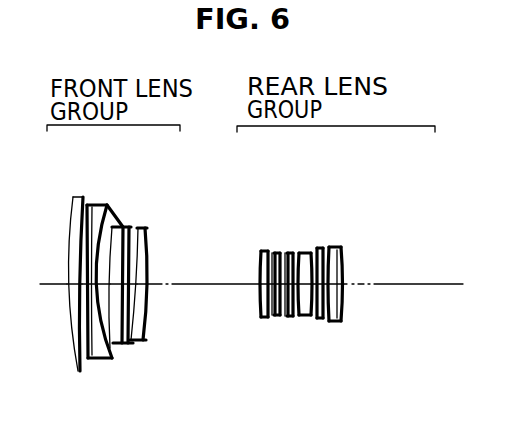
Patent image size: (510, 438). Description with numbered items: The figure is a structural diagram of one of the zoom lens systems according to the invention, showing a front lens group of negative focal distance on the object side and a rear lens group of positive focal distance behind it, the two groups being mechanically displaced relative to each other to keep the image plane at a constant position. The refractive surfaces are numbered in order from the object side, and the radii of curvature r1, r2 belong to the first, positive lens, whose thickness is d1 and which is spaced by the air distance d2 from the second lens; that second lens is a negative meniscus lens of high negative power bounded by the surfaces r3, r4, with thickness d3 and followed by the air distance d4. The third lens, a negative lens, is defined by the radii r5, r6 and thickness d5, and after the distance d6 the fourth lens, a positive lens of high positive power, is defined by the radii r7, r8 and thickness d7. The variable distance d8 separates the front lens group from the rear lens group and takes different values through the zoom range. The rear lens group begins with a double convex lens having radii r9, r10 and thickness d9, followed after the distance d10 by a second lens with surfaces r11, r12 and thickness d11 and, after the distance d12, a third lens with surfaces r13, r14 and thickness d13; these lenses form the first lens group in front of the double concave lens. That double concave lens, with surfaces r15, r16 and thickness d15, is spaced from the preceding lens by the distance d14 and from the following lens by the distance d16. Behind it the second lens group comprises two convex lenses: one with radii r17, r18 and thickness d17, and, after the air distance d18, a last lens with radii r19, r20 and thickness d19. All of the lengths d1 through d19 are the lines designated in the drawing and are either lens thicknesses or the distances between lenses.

The radius of curvature of first refractive surface r1 is at (74, 200).
The radius of curvature of second refractive surface r2 is at (80, 199).
The radius of curvature of third refractive surface r3 is at (87, 205).
The radius of curvature of fourth refractive surface r4 is at (112, 226).
The radius of curvature of fifth refractive surface r5 is at (124, 226).
The radius of curvature of sixth refractive surface r6 is at (130, 227).
The radius of curvature of seventh refractive surface r7 is at (145, 228).
The radius of curvature of eighth refractive surface r8 is at (148, 235).
The radius of curvature of ninth refractive surface r9 is at (261, 253).
The radius of curvature of tenth refractive surface r10 is at (265, 251).
The radius of curvature of eleventh refractive surface r11 is at (275, 253).
The radius of curvature of twelfth refractive surface r12 is at (280, 252).
The radius of curvature of thirteenth refractive surface r13 is at (290, 253).
The radius of curvature of fourteenth refractive surface r14 is at (298, 253).
The radius of curvature of fifteenth refractive surface r15 is at (315, 253).
The radius of curvature of sixteenth refractive surface r16 is at (330, 249).
The radius of curvature of seventeenth refractive surface r17 is at (340, 255).
The radius of curvature of eighteenth refractive surface r18 is at (348, 257).
The radius of curvature of nineteenth refractive surface r19 is at (345, 265).
The radius of curvature of twentieth refractive surface r20 is at (347, 273).
The thickness of first lens d1 is at (70, 300).
The distance between first and second lenses d2 is at (78, 330).
The thickness of second lens d3 is at (95, 358).
The distance between second and third lenses d4 is at (105, 345).
The thickness of third lens d5 is at (120, 343).
The distance between third and fourth lenses d6 is at (133, 338).
The thickness of fourth lens d7 is at (147, 318).
The distance between front and rear lens groups d8 is at (190, 284).
The thickness of double convex lens d9 is at (260, 300).
The distance between first and second lenses of rear group d10 is at (262, 320).
The thickness of second lens of rear group d11 is at (272, 313).
The distance between second and third lenses of rear group d12 is at (286, 318).
The thickness of third lens of rear group d13 is at (290, 313).
The distance between third lens and double concave lens d14 is at (303, 318).
The thickness of double concave lens d15 is at (311, 318).
The distance between double concave lens and following convex lens d16 is at (336, 323).
The thickness of first convex lens of second lens group d17 is at (343, 325).
The distance between convex lenses of second lens group d18 is at (348, 307).
The thickness of last convex lens d19 is at (350, 297).